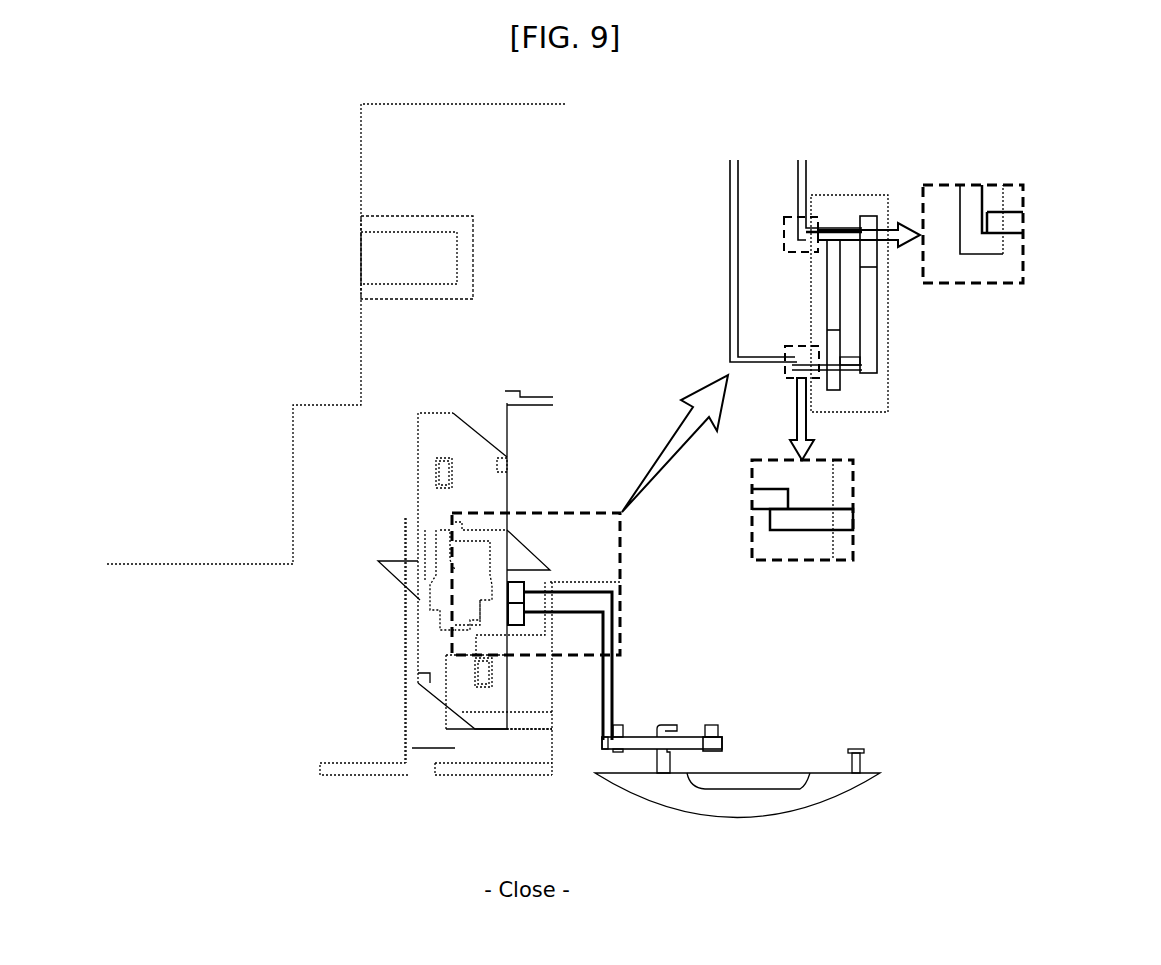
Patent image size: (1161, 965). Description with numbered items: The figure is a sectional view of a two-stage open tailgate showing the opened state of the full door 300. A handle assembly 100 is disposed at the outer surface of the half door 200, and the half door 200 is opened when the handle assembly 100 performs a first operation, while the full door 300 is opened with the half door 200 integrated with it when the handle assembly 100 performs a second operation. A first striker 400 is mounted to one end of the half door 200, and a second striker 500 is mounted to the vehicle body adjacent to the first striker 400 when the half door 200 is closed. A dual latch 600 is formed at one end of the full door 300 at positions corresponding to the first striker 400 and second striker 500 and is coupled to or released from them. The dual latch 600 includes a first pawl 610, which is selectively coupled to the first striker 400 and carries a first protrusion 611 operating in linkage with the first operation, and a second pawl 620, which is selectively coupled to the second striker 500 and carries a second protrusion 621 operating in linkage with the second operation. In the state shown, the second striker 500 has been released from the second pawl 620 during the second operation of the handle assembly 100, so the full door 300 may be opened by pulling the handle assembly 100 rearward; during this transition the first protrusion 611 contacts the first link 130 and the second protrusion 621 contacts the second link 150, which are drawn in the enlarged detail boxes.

The handle assembly 100 is at (777, 815).
The first link 130 is at (731, 263).
The second link 150 is at (797, 182).
The half door 200 is at (600, 757).
The full door 300 is at (530, 442).
The first striker 400 is at (532, 720).
The second striker 500 is at (429, 221).
The dual latch 600 is at (835, 193).
The first pawl 610 is at (483, 680).
The first protrusion 611 is at (778, 518).
The second pawl 620 is at (440, 470).
The second protrusion 621 is at (995, 218).